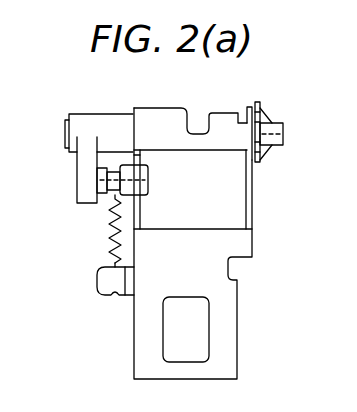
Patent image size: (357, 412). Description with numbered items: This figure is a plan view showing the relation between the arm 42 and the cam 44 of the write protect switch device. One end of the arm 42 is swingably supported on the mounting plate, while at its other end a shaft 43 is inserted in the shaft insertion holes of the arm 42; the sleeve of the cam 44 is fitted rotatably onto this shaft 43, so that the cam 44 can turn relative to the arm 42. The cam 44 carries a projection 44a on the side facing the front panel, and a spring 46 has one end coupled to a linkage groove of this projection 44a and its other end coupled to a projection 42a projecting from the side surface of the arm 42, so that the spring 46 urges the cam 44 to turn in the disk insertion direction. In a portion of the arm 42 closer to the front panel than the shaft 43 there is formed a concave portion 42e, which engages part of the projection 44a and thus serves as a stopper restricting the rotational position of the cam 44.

The arm 42 is at (253, 243).
The projection 42a is at (97, 283).
The concave portion 42e is at (141, 215).
The shaft 43 is at (285, 131).
The cam 44 is at (86, 117).
The projection 44a is at (149, 177).
The spring 46 is at (108, 236).